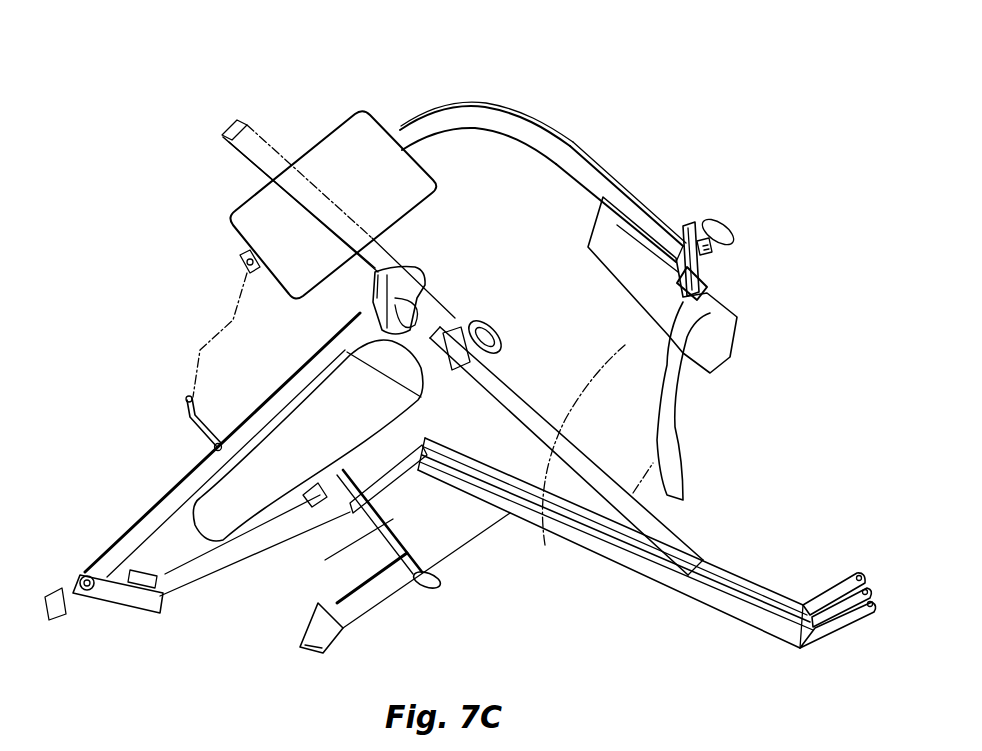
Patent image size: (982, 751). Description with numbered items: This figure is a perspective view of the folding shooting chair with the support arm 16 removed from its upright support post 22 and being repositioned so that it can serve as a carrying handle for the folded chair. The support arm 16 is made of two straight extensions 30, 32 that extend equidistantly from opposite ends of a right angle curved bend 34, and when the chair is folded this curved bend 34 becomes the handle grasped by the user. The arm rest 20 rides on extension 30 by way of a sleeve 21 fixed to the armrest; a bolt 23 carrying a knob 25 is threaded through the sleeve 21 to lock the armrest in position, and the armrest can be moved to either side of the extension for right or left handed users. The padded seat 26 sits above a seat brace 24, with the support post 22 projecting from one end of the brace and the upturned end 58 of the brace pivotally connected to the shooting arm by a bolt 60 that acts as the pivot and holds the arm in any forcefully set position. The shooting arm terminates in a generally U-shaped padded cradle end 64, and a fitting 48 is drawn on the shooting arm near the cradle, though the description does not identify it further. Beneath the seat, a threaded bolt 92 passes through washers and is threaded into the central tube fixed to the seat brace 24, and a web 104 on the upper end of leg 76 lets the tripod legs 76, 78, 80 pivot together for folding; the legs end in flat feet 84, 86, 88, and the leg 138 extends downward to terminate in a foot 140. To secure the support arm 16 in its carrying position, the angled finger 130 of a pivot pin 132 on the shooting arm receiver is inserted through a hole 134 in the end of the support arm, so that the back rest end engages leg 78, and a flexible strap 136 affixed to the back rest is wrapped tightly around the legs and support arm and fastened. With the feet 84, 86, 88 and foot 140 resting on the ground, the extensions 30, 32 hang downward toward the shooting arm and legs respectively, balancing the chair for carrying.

The support arm 16 is at (617, 101).
The arm rest 20 is at (303, 249).
The sleeve 21 is at (708, 278).
The support post 22 is at (527, 413).
The bolt 23 is at (683, 226).
The seat brace 24 is at (182, 587).
The knob 25 is at (736, 236).
The padded seat 26 is at (326, 462).
The straight extension 30 is at (400, 128).
The straight extension 32 is at (623, 190).
The right angle curved bend 34 is at (510, 108).
The adjustment knob 48 is at (492, 325).
The upturned end 58 is at (120, 597).
The bolt 60 is at (82, 581).
The padded cradle end 64 is at (372, 295).
The tripod leg 76 is at (640, 588).
The tripod leg 78 is at (737, 594).
The tripod leg 80 is at (757, 585).
The flat foot 84 is at (825, 628).
The flat foot 86 is at (838, 610).
The flat foot 88 is at (843, 583).
The threaded bolt 92 is at (432, 585).
The web 104 is at (456, 526).
The angled finger 130 is at (186, 398).
The pivot pin 132 is at (193, 432).
The hole 134 is at (245, 268).
The flexible strap 136 is at (668, 415).
The leg 138 is at (336, 604).
The foot 140 is at (308, 640).